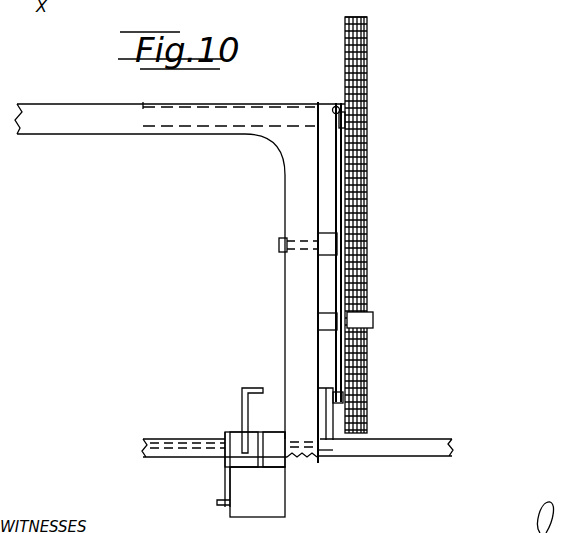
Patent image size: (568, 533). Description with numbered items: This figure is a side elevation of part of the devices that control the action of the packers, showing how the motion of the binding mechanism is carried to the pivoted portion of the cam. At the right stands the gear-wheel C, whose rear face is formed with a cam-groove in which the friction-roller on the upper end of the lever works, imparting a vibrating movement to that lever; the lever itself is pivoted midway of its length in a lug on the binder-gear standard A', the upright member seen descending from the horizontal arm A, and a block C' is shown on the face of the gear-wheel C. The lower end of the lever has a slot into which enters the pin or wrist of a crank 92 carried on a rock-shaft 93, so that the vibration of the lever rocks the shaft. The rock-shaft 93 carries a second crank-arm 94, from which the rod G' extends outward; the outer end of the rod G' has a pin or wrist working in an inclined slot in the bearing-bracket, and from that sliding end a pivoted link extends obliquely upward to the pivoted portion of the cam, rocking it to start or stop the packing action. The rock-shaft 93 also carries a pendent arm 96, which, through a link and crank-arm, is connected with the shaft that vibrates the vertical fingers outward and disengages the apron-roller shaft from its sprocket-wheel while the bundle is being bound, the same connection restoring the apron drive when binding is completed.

The horizontal arm A is at (180, 103).
The binder-gear standard A' is at (279, 286).
The gear-wheel C is at (368, 225).
The block on rack column C' is at (374, 296).
The rod G' is at (319, 282).
The crank 92 is at (329, 426).
The rock-shaft 93 is at (283, 432).
The second crank-arm 94 is at (242, 413).
The pendent arm 96 is at (224, 490).